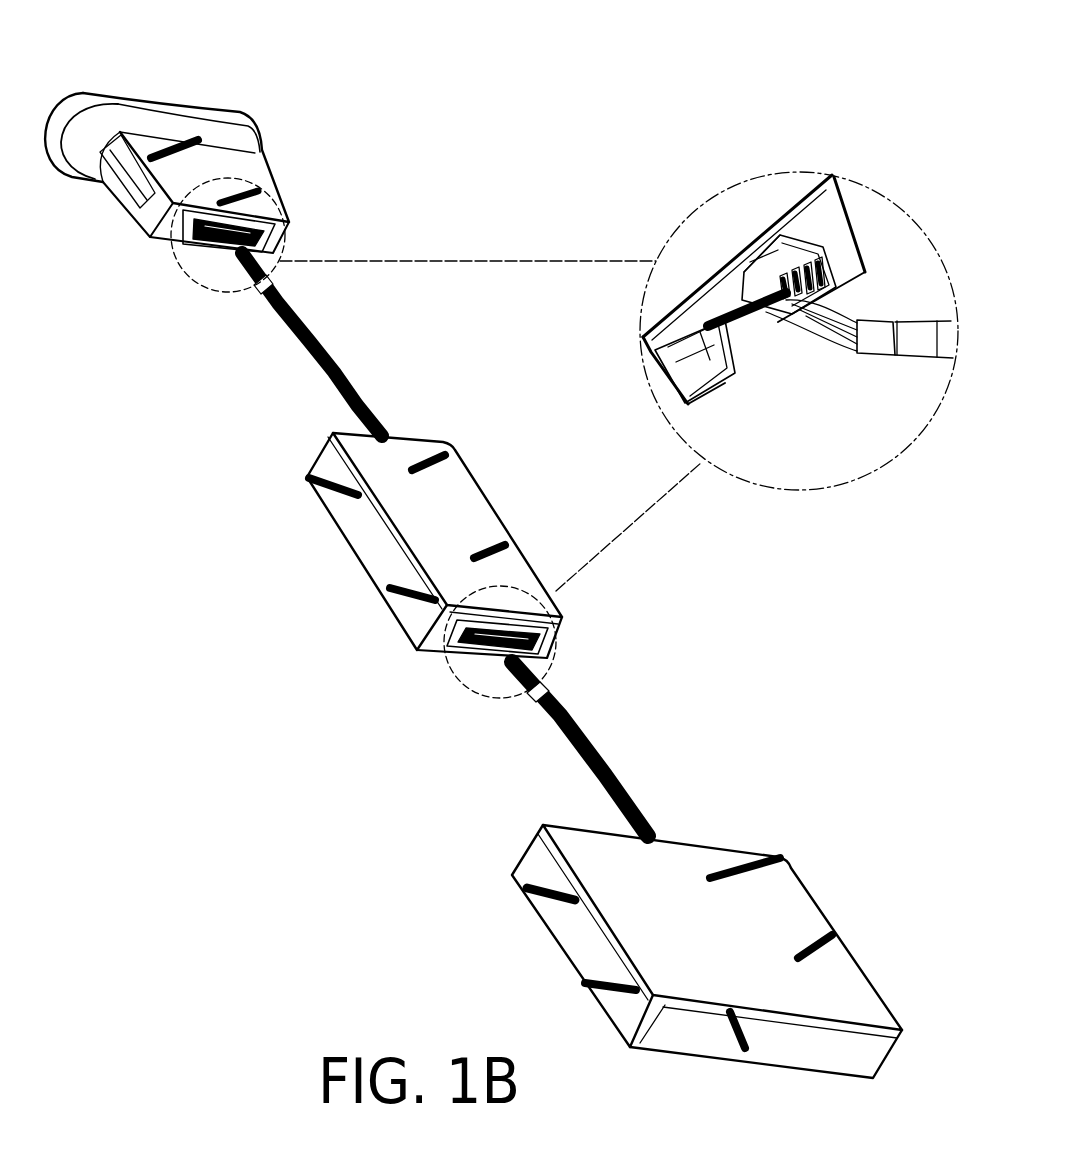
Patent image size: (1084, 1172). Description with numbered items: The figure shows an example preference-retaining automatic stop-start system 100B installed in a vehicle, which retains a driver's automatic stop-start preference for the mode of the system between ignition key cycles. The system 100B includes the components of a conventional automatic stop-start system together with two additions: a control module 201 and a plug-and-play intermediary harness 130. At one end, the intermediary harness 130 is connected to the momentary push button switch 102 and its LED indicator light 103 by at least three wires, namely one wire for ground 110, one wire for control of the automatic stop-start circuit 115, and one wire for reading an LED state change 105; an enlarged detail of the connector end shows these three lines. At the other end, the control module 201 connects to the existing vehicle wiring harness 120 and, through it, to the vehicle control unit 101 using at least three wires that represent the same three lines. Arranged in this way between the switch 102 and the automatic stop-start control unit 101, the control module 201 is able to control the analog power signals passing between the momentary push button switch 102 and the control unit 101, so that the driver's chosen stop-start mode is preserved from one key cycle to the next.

The preference-retaining automatic stop-start system 100B is at (835, 51).
The vehicle control unit 101 is at (703, 843).
The switch 102 is at (210, 110).
The LED indicator light 103 is at (92, 91).
The LED state change line 105 is at (778, 350).
The ground line 110 is at (817, 333).
The automatic stop-start circuit control line 115 is at (803, 340).
The vehicle wiring harness 120 is at (607, 752).
The plug-and-play intermediary harness 130 is at (332, 348).
The control module 201 is at (475, 487).